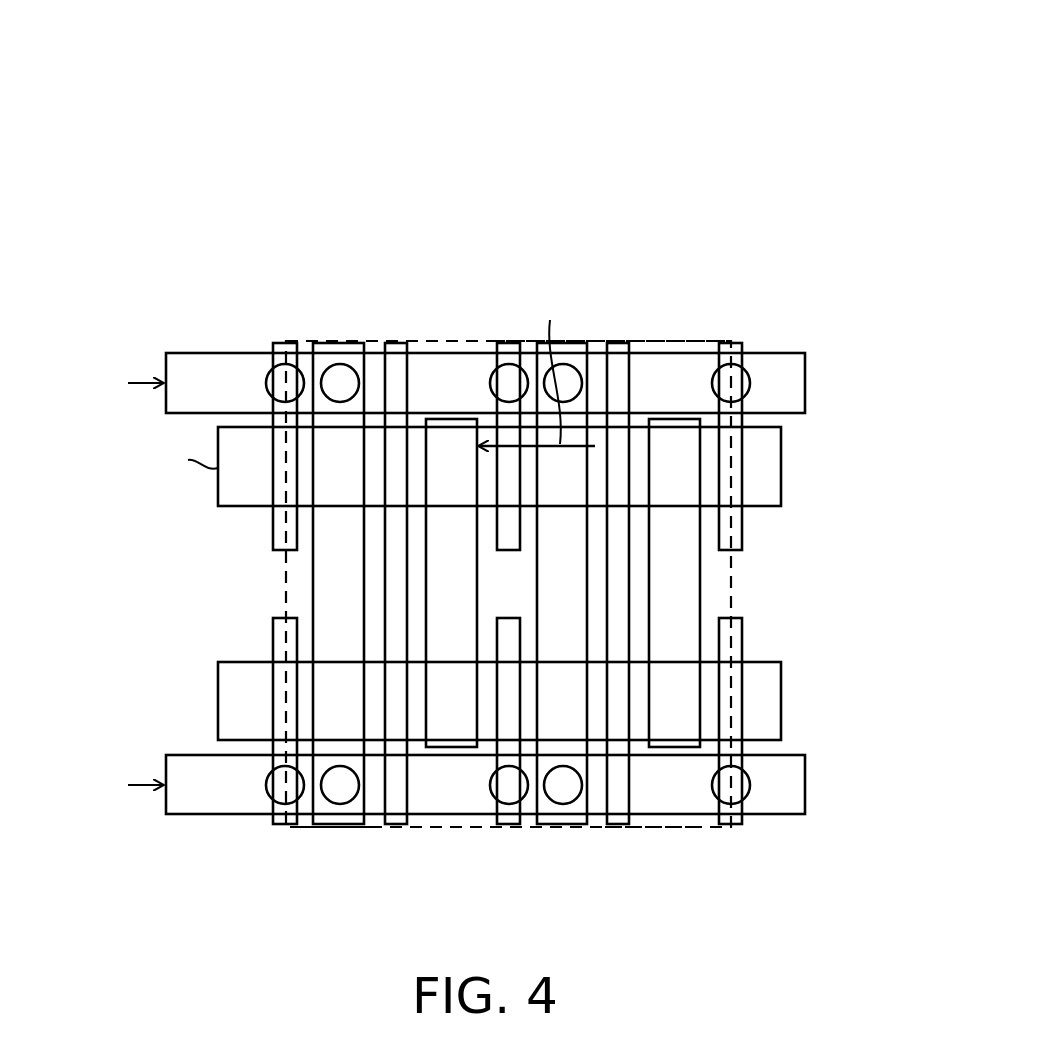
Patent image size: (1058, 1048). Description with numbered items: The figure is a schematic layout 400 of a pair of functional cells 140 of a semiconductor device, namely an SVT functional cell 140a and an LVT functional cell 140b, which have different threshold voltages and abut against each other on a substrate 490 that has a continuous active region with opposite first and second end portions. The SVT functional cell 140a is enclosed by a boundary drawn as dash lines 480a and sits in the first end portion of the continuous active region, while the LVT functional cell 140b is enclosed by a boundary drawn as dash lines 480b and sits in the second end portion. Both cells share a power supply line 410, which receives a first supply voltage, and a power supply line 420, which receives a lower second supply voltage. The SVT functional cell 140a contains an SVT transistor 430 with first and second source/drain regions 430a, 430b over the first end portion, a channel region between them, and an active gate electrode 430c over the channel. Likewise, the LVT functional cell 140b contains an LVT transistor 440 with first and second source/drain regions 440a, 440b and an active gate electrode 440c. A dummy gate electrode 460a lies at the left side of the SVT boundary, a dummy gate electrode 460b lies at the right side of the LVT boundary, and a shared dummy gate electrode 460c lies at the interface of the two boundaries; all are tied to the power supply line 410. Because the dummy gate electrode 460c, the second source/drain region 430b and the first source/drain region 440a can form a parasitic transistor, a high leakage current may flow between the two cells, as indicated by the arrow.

The layout 400 is at (835, 925).
The power supply line 410 is at (210, 367).
The power supply line 420 is at (207, 800).
The SVT transistor 430 is at (748, 15).
The first source/drain region 430a is at (347, 548).
The second source/drain region 430b is at (445, 552).
The active gate electrode 430c is at (363, 622).
The LVT transistor 440 is at (748, 152).
The first source/drain region 440a is at (568, 547).
The second source/drain region 440b is at (670, 547).
The active gate electrode 440c is at (587, 633).
The dummy gate electrode 460a is at (278, 532).
The dummy gate electrode 460b is at (737, 530).
The dummy gate electrode 460c is at (513, 537).
The dash lines 480a is at (337, 830).
The dash lines 480b is at (643, 830).
The substrate 490 is at (303, 582).
The functional cells 140 is at (655, 233).
The SVT functional cell 140a is at (375, 338).
The LVT functional cell 140b is at (645, 338).